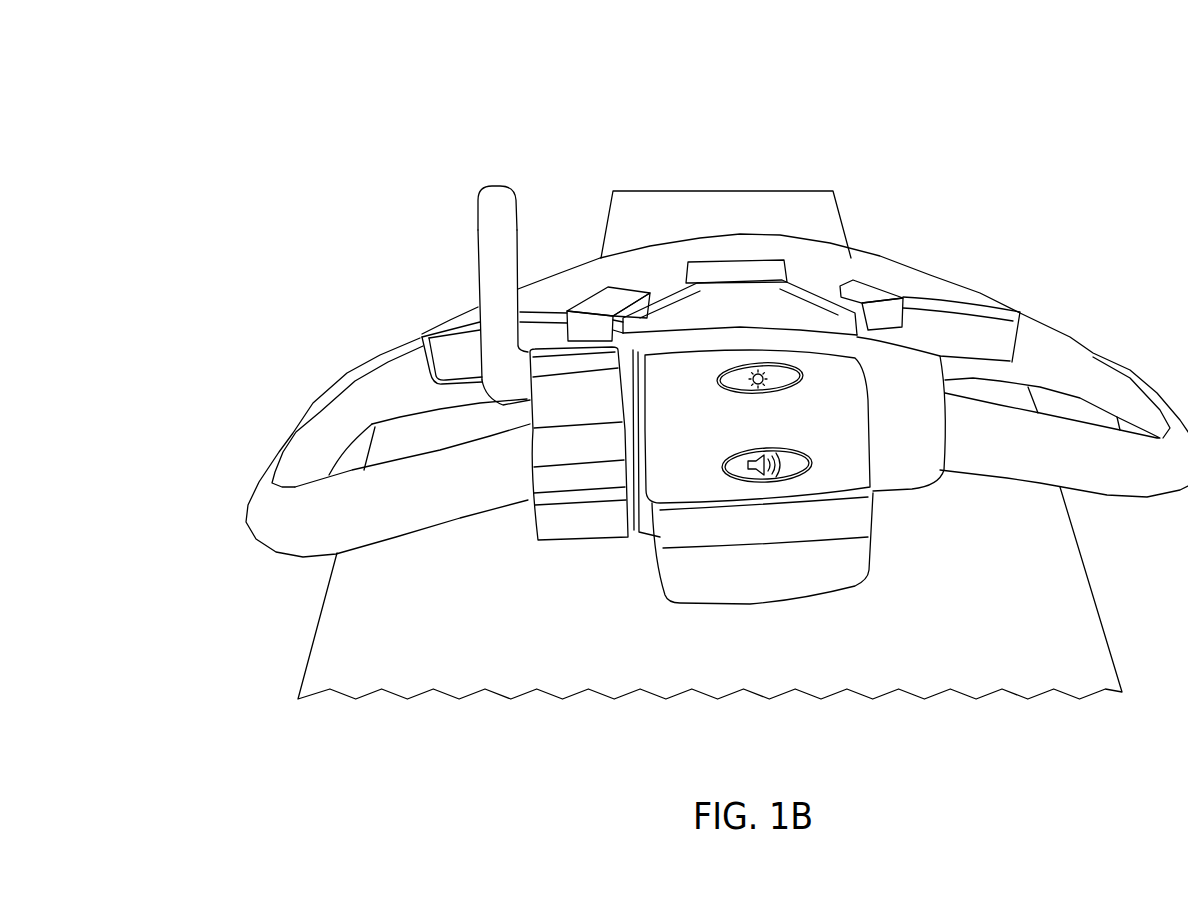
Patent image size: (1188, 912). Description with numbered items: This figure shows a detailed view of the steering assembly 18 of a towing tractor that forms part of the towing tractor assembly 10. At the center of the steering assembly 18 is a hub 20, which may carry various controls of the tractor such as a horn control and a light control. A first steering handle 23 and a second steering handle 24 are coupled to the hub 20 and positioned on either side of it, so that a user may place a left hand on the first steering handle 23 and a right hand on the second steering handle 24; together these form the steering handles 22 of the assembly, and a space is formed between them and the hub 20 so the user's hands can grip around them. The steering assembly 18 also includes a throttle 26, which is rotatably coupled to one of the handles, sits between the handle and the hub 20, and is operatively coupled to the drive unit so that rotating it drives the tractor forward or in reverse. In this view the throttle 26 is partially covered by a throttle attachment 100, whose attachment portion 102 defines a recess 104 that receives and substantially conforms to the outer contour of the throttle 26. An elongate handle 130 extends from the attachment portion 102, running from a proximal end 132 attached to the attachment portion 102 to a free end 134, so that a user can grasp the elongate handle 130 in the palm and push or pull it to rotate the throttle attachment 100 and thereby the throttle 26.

The towing tractor assembly 10 is at (985, 136).
The steering assembly 18 is at (609, 118).
The hub 20 is at (860, 250).
The steering wheel rim 22 is at (146, 452).
The first steering handle 23 is at (291, 423).
The second steering handle 24 is at (1130, 368).
The throttle 26 is at (645, 352).
The throttle attachment 100 is at (450, 196).
The attachment portion 102 is at (553, 335).
The recess 104 is at (634, 383).
The elongate handle 130 is at (523, 216).
The proximal end 132 is at (512, 403).
The free end 134 is at (494, 184).